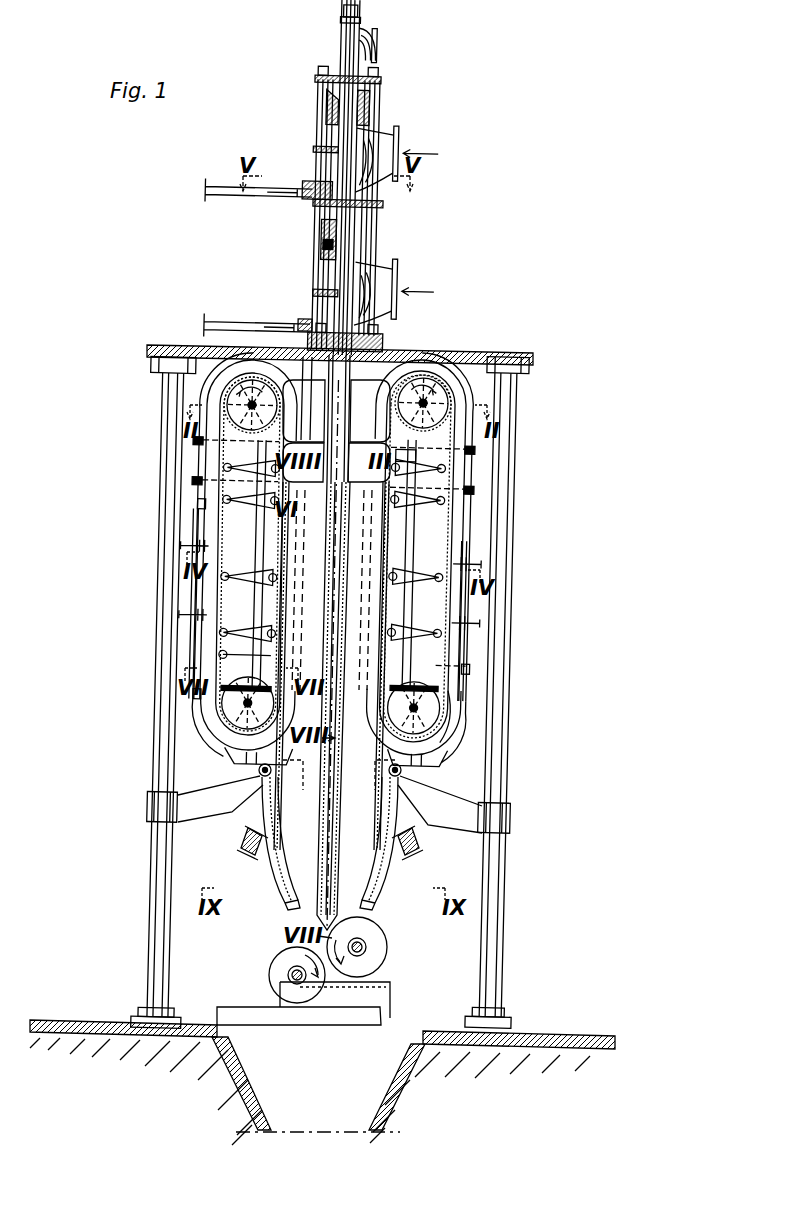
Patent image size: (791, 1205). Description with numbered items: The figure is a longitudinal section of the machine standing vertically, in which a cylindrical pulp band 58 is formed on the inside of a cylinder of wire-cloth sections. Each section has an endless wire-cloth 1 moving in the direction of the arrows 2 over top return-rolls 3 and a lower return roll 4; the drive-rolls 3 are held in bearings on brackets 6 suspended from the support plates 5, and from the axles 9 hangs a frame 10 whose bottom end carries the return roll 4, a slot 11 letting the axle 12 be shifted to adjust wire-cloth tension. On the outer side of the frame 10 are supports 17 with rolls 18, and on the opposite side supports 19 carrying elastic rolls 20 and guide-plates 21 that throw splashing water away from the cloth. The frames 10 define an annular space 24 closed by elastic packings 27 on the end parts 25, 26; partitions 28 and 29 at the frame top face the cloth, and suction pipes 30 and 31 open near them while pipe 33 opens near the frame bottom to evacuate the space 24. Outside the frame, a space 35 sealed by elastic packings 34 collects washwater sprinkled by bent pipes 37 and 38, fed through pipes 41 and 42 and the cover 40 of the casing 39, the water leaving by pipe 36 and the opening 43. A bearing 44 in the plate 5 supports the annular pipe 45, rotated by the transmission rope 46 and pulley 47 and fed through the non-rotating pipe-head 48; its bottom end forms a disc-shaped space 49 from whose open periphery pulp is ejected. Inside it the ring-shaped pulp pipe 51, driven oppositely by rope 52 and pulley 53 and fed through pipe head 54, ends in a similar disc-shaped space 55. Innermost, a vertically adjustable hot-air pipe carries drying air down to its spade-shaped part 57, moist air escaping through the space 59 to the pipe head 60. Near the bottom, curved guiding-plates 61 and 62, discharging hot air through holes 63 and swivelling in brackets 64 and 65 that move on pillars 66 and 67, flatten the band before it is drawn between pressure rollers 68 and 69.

The endless wire-cloth 1 is at (426, 392).
The arrows 2 is at (298, 412).
The top return-rolls 3 is at (430, 393).
The return roll 4 is at (433, 718).
The support plates 5 is at (200, 347).
The brackets 6 is at (266, 358).
The axles 9 is at (460, 395).
The frame 10 is at (384, 548).
The slot 11 is at (240, 736).
The axle of the return-roll 12 is at (255, 703).
The supports 17 is at (237, 582).
The rolls 18 is at (235, 637).
The supports 19 is at (280, 565).
The elastic rolls 20 is at (280, 636).
The guide-plates 21 is at (280, 600).
The annular space 24 is at (384, 574).
The part 25 is at (418, 455).
The part 26 is at (384, 651).
The elastic packings 27 is at (422, 449).
The partition 28 is at (417, 452).
The partition 29 is at (415, 497).
The pipe 30 is at (197, 443).
The pipe 31 is at (197, 483).
The pipe 33 is at (425, 665).
The elastic packings 34 is at (222, 498).
The space 35 is at (237, 543).
The pipe 36 is at (472, 668).
The bent pipe 37 is at (203, 547).
The bent pipe 38 is at (203, 616).
The casing 39 is at (465, 700).
The cover 40 is at (472, 600).
The pipe 41 is at (472, 563).
The pipe 42 is at (472, 622).
The opening 43 is at (445, 754).
The bearing 44 is at (364, 380).
The annular pipe 45 is at (355, 405).
The transmission rope 46 is at (234, 325).
The pulley 47 is at (310, 323).
The pipe-head 48 is at (382, 305).
The disc-shaped space 49 is at (350, 433).
The ring-shaped pulp pipe 51 is at (366, 260).
The rope 52 is at (228, 190).
The pulley 53 is at (312, 192).
The pipe head 54 is at (380, 128).
The disc-shaped space 55 is at (347, 488).
The spade-shaped part 57 is at (317, 877).
The pulp band 58 is at (462, 975).
The space 59 is at (332, 246).
The pipe head 60 is at (366, 52).
The curved guiding-plate 61 is at (268, 823).
The curved guiding-plate 62 is at (390, 823).
The holes 63 is at (275, 905).
The bracket 64 is at (262, 790).
The bracket 65 is at (450, 795).
The pillar 66 is at (165, 889).
The pillar 67 is at (505, 905).
The pressure roller 68 is at (278, 976).
The pressure roller 69 is at (387, 947).